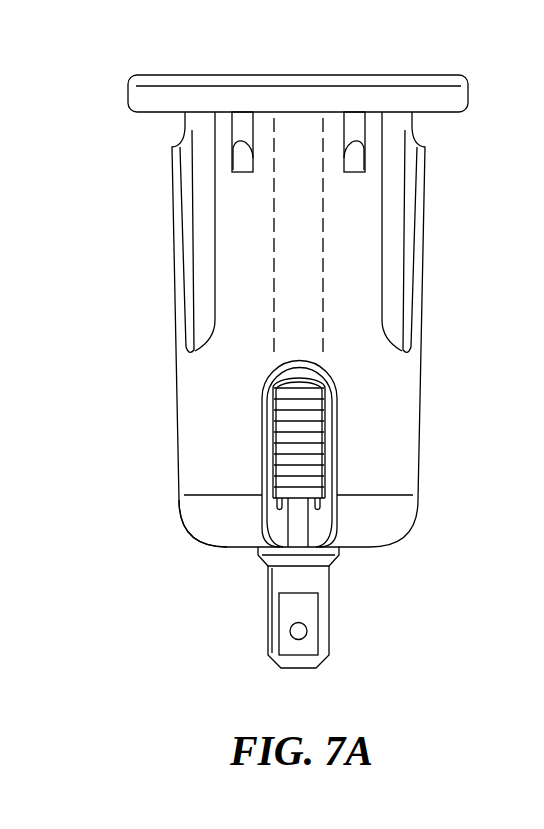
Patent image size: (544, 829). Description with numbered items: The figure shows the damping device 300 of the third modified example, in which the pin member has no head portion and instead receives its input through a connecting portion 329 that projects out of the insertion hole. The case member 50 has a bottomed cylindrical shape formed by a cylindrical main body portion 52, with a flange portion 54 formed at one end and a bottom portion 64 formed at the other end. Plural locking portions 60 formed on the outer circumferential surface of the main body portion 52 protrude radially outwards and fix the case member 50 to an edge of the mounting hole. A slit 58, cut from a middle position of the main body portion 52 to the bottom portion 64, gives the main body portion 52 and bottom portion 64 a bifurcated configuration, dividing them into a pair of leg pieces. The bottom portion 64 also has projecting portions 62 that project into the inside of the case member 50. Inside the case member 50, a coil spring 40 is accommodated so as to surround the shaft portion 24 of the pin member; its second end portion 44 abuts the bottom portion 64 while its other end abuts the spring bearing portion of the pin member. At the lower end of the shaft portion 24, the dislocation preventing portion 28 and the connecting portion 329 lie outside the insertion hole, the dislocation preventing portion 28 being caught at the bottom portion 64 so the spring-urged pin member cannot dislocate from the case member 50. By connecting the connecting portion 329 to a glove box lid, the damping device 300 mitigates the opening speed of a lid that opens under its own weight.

The flange portion 54 is at (468, 93).
The main body portion 52 is at (360, 218).
The locking portions 60 is at (172, 145).
The case member 50 is at (200, 364).
The slit 58 is at (265, 417).
The shaft portion 24 is at (312, 417).
The coil spring 40 is at (305, 450).
The second end portion 44 is at (310, 492).
The projecting portions 62 is at (318, 508).
The bottom portion 64 is at (232, 550).
The dislocation preventing portion 28 is at (332, 566).
The connecting portion 329 is at (290, 632).
The damping device 300 is at (384, 692).